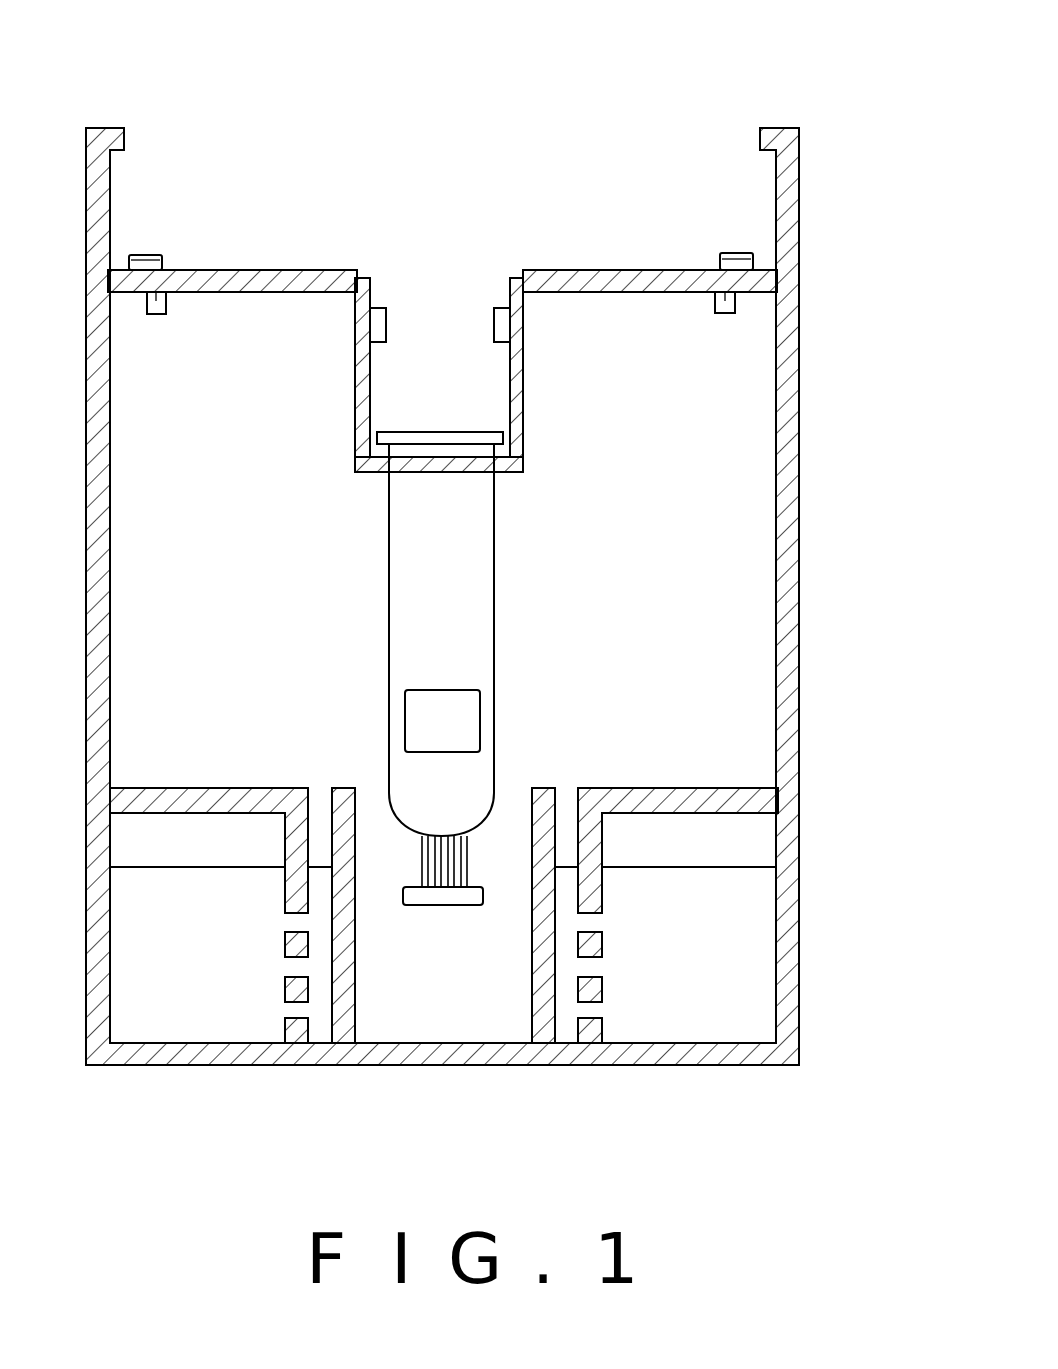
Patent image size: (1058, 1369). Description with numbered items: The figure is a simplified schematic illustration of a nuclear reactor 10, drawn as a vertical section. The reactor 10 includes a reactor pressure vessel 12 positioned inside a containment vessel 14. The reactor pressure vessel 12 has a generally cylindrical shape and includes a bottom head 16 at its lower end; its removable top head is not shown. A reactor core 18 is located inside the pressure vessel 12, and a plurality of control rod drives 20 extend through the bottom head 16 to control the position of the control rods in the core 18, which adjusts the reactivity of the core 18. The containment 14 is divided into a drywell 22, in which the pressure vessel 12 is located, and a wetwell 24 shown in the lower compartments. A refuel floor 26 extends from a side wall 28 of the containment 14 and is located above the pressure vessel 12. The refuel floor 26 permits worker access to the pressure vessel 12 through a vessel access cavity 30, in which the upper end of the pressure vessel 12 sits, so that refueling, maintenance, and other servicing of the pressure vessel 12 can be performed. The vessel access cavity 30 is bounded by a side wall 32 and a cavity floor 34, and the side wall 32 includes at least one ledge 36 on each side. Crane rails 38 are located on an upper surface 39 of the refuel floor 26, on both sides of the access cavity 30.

The nuclear reactor 10 is at (502, 532).
The reactor pressure vessel 12 is at (527, 433).
The containment vessel 14 is at (800, 452).
The bottom head 16 is at (487, 706).
The reactor core 18 is at (475, 717).
The control rod drives 20 is at (414, 866).
The drywell 22 is at (207, 528).
The wetwell 24 is at (722, 852).
The refuel floor 26 is at (281, 268).
The side wall 28 is at (799, 326).
The vessel access cavity 30 is at (452, 386).
The side wall 32 is at (524, 382).
The cavity floor 34 is at (375, 468).
The ledge 36 is at (387, 318).
The crane rails 38 is at (140, 254).
The upper surface 39 is at (620, 268).